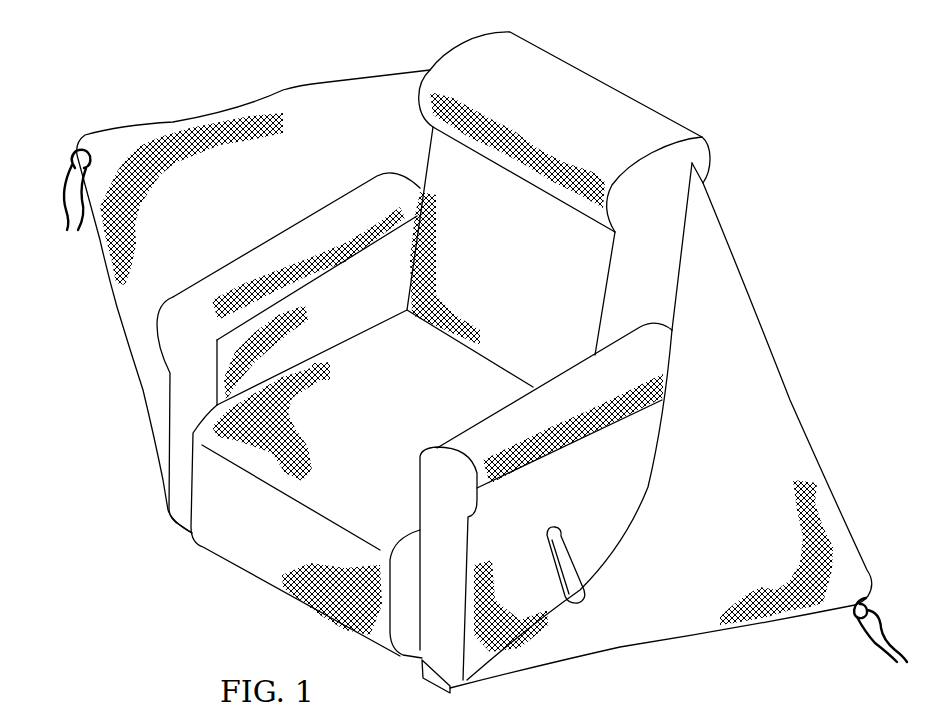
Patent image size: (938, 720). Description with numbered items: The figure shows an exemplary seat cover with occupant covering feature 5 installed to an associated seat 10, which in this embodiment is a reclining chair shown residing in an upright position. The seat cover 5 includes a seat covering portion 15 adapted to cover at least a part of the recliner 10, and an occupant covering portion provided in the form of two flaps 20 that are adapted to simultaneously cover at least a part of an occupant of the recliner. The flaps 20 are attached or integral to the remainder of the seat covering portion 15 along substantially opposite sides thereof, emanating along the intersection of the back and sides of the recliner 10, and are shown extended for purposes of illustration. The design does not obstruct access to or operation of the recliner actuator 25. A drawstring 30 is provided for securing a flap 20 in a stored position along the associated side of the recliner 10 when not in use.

The seat cover with occupant covering feature 5 is at (472, 351).
The seat 10 is at (433, 362).
The seat covering portion 15 is at (633, 485).
The flaps 20 is at (283, 98).
The recliner actuator 25 is at (558, 547).
The drawstring 30 is at (63, 193).